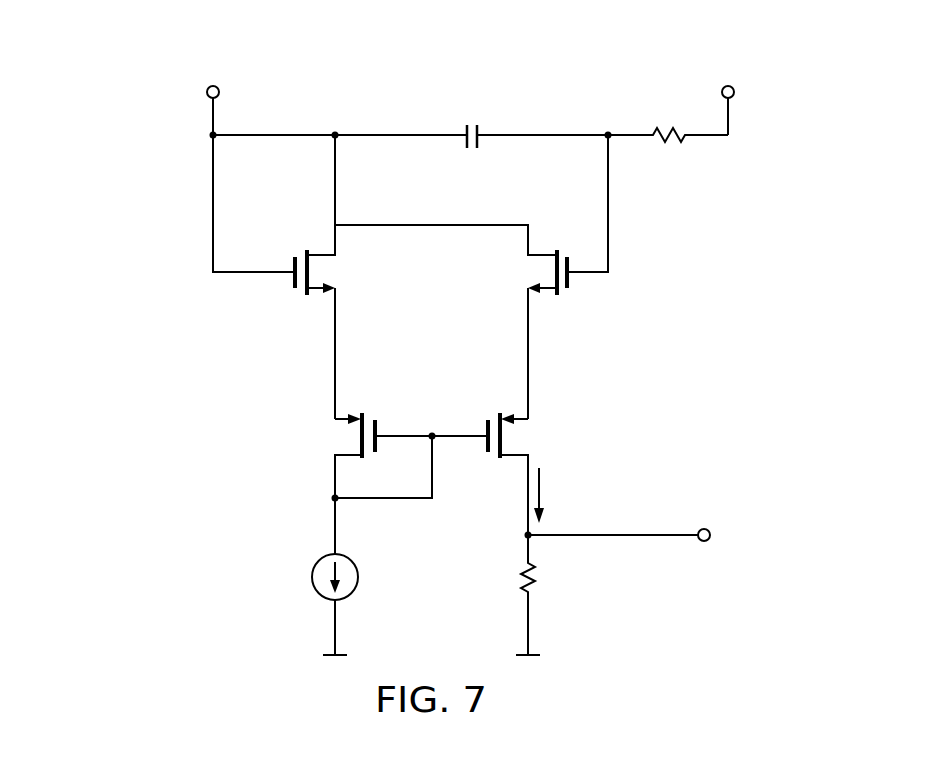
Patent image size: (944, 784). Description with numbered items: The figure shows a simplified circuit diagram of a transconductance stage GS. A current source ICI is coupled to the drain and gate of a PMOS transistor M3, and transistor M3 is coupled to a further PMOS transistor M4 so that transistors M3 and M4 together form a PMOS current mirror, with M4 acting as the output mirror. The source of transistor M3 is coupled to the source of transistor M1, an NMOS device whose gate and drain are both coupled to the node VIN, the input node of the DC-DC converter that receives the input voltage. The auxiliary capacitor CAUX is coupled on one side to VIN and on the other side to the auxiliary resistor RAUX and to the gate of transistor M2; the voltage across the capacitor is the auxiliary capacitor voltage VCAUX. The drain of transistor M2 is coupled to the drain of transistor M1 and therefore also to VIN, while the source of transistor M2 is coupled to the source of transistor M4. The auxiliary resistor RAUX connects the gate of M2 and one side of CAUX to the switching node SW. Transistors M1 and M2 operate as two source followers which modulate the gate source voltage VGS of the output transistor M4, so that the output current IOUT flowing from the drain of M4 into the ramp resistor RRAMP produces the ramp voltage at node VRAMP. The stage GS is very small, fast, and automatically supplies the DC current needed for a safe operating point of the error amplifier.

The transconductance stage GS is at (100, 150).
The input node VIN is at (215, 97).
The switching node SW is at (728, 95).
The auxiliary capacitor CAUX is at (471, 122).
The auxiliary resistor RAUX is at (668, 150).
The voltage across the auxiliary capacitor VCAUX is at (460, 238).
The transistor (source follower) M1 is at (271, 245).
The transistor (source follower) M2 is at (588, 245).
The transistor M3 is at (373, 457).
The transistor (output mirror) M4 is at (583, 474).
The gate source voltage VGS is at (496, 398).
The output current IOUT is at (564, 495).
The ramp voltage node VRAMP is at (658, 535).
The ramp resistor RRAMP is at (565, 595).
The current source ICI is at (318, 576).